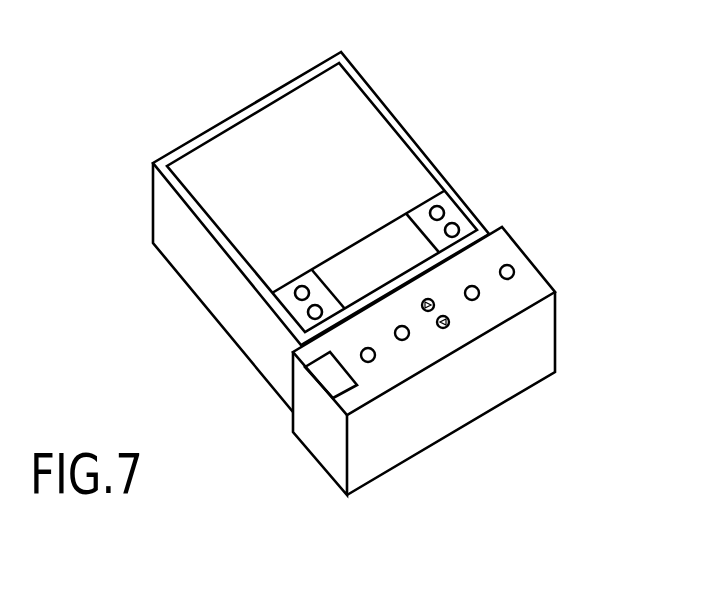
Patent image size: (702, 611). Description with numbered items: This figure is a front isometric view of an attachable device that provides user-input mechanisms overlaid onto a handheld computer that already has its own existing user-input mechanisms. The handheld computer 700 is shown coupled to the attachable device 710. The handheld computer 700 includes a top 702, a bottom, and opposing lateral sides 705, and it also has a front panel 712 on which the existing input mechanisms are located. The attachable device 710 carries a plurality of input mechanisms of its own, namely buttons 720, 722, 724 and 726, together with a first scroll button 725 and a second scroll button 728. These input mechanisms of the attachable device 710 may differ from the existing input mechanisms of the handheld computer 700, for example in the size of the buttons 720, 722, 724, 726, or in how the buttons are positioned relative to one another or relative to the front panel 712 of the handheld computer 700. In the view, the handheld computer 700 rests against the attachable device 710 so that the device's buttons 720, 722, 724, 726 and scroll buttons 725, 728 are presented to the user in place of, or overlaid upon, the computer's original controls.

The handheld computer 700 is at (226, 74).
The top 702 is at (183, 145).
The opposing lateral sides 705 is at (392, 112).
The front panel 712 is at (202, 218).
The attachable device 710 is at (296, 466).
The button 720 is at (375, 353).
The button 722 is at (409, 331).
The button 724 is at (479, 291).
The first scroll button 725 is at (434, 302).
The button 726 is at (514, 270).
The second scroll button 728 is at (449, 320).